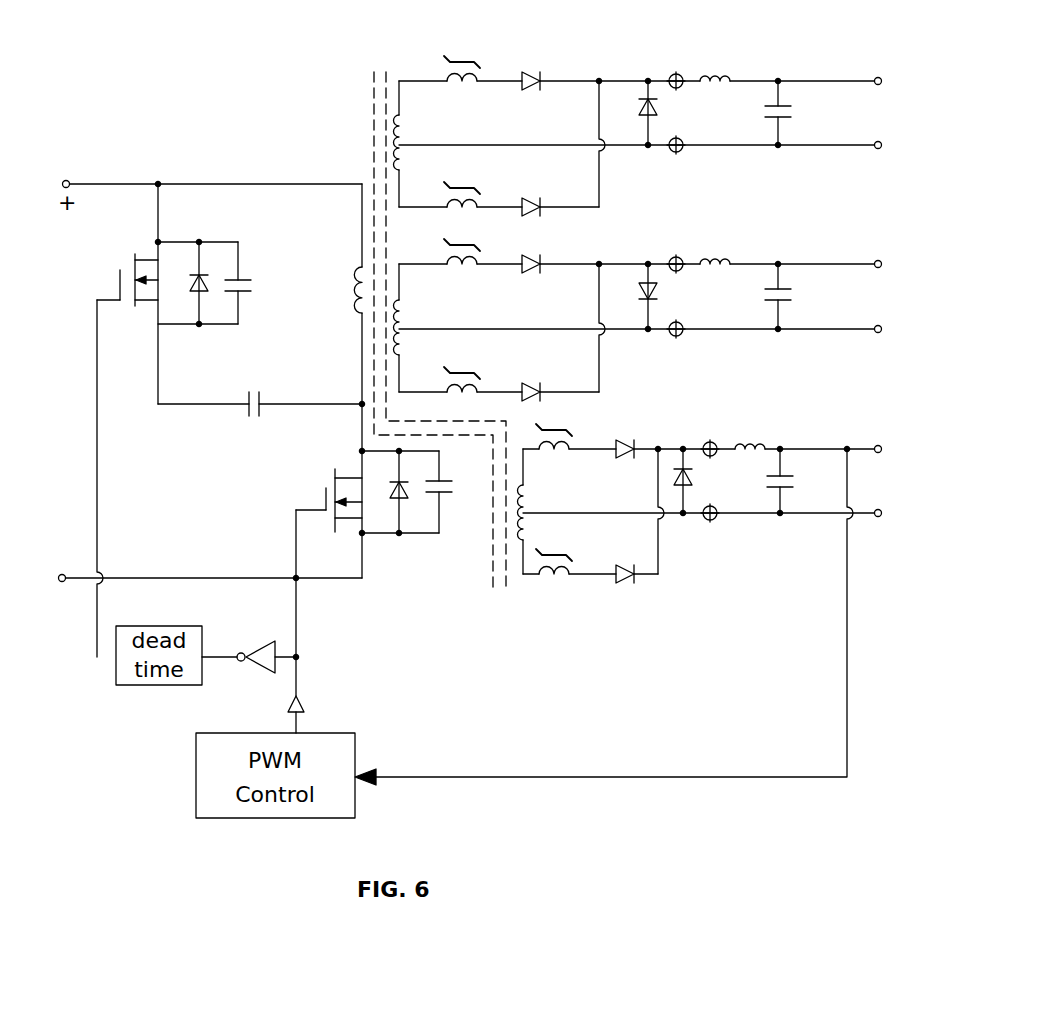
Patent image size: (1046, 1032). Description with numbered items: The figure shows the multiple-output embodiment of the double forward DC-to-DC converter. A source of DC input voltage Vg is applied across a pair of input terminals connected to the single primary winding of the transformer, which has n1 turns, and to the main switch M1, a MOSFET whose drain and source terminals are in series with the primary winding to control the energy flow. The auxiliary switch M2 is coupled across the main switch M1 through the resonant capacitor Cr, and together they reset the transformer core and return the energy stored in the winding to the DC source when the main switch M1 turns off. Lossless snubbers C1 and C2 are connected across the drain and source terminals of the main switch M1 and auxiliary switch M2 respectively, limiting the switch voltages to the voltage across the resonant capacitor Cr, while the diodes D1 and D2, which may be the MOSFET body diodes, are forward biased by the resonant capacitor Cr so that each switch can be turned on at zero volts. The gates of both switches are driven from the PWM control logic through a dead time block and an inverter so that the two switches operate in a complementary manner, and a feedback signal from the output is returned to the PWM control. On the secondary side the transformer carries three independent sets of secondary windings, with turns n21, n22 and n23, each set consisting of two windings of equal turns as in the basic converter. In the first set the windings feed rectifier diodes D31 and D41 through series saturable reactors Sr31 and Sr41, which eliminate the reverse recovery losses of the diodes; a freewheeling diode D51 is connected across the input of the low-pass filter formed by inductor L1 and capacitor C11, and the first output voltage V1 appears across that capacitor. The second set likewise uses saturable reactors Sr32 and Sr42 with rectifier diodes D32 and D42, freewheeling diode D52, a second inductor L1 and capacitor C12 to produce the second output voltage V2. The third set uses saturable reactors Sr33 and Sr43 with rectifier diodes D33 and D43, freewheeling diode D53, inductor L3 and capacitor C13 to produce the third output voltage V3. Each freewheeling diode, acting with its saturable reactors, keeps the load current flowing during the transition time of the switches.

The primary winding turns n1 is at (337, 381).
The first secondary winding turns n21 is at (419, 144).
The second secondary winding turns n22 is at (419, 328).
The third secondary winding turns n23 is at (521, 511).
The saturable reactor Sr31 is at (467, 53).
The saturable reactor Sr41 is at (471, 184).
The saturable reactor Sr32 is at (470, 273).
The saturable reactor Sr42 is at (472, 367).
The saturable reactor Sr33 is at (566, 457).
The saturable reactor Sr43 is at (563, 551).
The rectifier diode D31 is at (526, 66).
The rectifier diode D41 is at (528, 194).
The rectifier diode D32 is at (530, 283).
The rectifier diode D42 is at (543, 378).
The rectifier diode D33 is at (635, 469).
The rectifier diode D43 is at (635, 563).
The freewheeling diode D51 is at (673, 112).
The freewheeling diode D52 is at (673, 296).
The freewheeling diode D53 is at (706, 480).
The filter inductor L1 is at (715, 151).
The filter inductor L3 is at (750, 429).
The filter capacitor C11 is at (800, 112).
The filter capacitor C12 is at (800, 296).
The filter capacitor C13 is at (802, 480).
The first output voltage V1 is at (890, 111).
The second output voltage V2 is at (890, 295).
The third output voltage V3 is at (890, 479).
The input DC voltage Vg is at (199, 478).
The main switch M1 is at (329, 515).
The auxiliary switch M2 is at (127, 304).
The diode D1 is at (411, 509).
The lossless snubber C1 is at (452, 511).
The diode D2 is at (198, 265).
The lossless snubber C2 is at (245, 264).
The resonant capacitor Cr is at (260, 386).